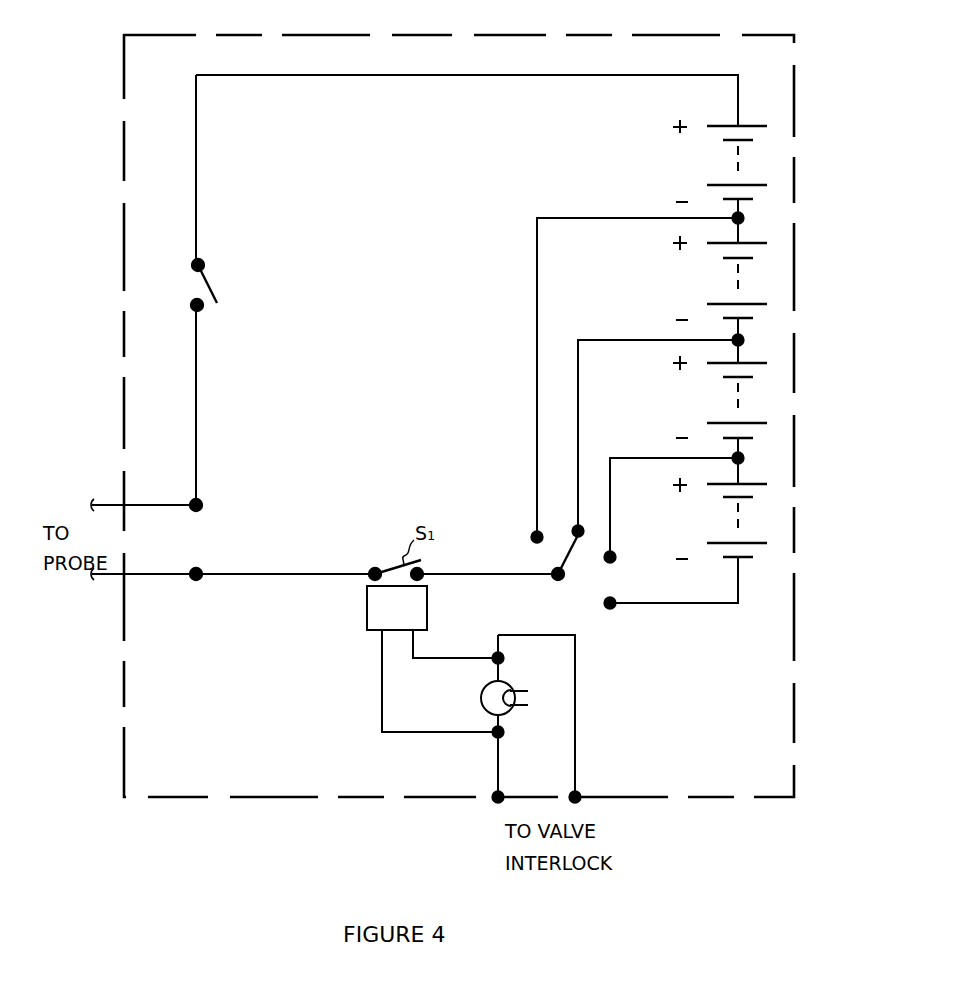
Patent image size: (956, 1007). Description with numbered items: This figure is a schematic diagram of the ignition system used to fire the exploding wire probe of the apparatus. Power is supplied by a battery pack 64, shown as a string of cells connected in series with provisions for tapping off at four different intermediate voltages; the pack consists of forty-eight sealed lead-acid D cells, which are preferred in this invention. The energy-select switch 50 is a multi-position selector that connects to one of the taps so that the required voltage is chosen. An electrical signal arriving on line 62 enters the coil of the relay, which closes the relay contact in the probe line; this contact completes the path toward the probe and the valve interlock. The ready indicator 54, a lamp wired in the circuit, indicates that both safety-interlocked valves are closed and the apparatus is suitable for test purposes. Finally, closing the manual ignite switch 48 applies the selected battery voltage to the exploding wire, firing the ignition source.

The manual ignite switch 48 is at (208, 288).
The energy-select switch 50 is at (566, 584).
The ready indicator 54 is at (506, 714).
The line 62 is at (382, 686).
The battery pack 64 is at (758, 352).